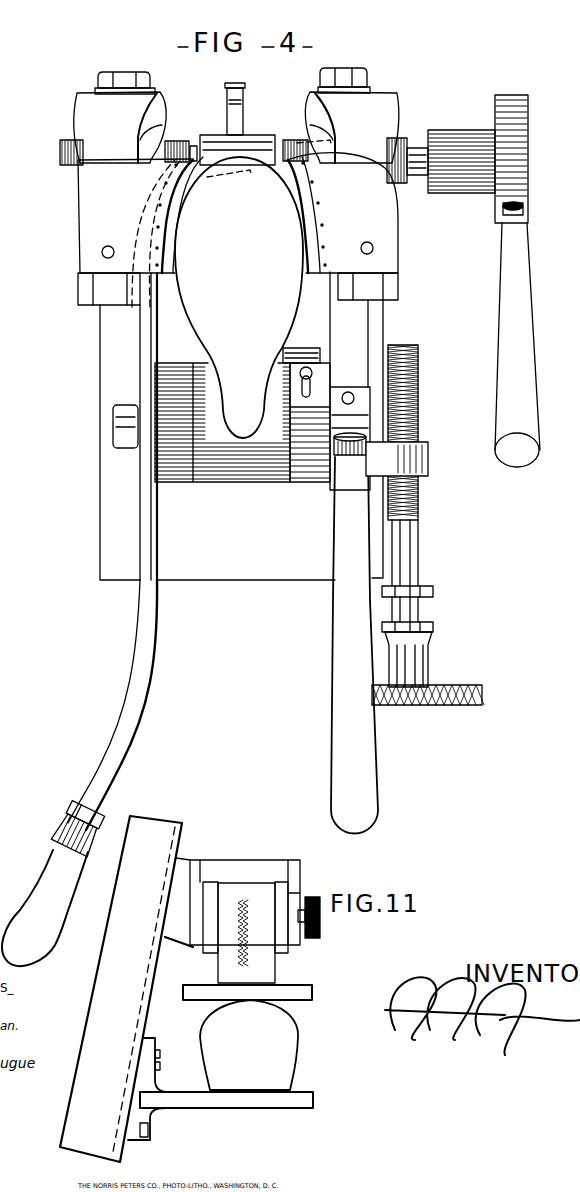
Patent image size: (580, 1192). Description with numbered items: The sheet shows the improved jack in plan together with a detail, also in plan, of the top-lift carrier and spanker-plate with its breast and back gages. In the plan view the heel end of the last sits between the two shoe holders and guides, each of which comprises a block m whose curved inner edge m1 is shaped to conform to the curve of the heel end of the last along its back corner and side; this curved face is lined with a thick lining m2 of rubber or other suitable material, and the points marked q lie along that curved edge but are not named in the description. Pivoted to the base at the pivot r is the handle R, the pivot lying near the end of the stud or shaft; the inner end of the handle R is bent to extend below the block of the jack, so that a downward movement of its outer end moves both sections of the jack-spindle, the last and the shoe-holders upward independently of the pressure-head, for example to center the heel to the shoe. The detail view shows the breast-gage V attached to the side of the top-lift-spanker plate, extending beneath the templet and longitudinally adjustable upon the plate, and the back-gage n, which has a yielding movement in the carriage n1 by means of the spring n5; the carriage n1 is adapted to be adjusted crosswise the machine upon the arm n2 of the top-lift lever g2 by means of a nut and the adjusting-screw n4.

In FIG. 4, the block m is at (238, 230).
In FIG. 4, the curved inner edge m1 is at (310, 197).
In FIG. 4, the lining m2 is at (312, 240).
In FIG. 4, the rivets q is at (157, 227).
In FIG. 4, the pivot r is at (103, 426).
In FIG. 4, the handle R is at (147, 595).
In FIG. 11, the top-lift lever g2 is at (121, 989).
In FIG. 11, the back-gage n is at (303, 993).
In FIG. 11, the carriage n1 is at (280, 948).
In FIG. 11, the arm of the top-lift lever n2 is at (293, 938).
In FIG. 11, the adjusting-screw n4 is at (318, 930).
In FIG. 11, the spring n5 is at (240, 963).
In FIG. 11, the breast-gage V is at (202, 1100).